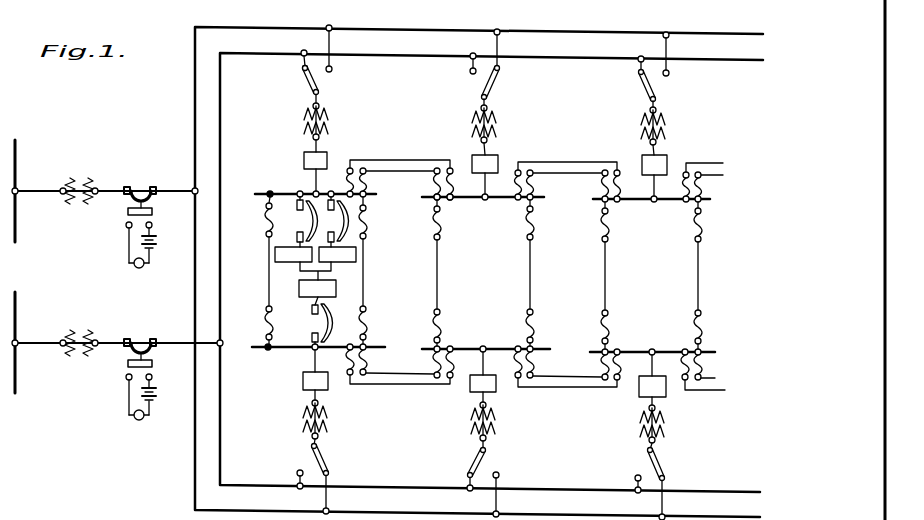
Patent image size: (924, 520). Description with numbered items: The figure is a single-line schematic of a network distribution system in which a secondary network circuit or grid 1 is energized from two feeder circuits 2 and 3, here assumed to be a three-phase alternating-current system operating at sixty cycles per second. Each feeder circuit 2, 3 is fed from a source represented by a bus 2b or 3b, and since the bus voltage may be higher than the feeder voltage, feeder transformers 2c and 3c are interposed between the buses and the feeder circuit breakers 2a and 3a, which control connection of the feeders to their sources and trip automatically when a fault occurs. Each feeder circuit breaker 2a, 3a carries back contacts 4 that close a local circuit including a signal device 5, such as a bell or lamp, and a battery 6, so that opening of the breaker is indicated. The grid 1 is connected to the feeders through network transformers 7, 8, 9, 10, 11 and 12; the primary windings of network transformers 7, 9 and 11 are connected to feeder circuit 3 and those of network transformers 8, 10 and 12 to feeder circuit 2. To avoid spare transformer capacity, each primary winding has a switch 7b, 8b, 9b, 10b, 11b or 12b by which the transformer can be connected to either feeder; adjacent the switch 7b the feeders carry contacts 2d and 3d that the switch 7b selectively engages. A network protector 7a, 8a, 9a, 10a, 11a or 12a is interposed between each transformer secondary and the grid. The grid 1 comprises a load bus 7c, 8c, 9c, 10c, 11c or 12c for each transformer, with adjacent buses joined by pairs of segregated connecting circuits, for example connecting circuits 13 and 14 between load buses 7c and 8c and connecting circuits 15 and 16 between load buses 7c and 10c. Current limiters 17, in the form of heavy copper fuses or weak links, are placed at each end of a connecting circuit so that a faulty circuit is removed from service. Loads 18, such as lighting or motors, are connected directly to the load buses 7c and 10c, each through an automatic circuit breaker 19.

The secondary network circuit or grid 1 is at (573, 281).
The feeder circuit 2 is at (177, 185).
The feeder circuit breaker 2a is at (128, 198).
The bus 2b is at (17, 150).
The feeder transformer 2c is at (85, 178).
The contact 2d is at (333, 69).
The feeder circuit 3 is at (177, 337).
The feeder circuit breaker 3a is at (127, 351).
The bus 3b is at (17, 370).
The feeder transformer 3c is at (78, 361).
The contact 3d is at (301, 69).
The back contacts 4 is at (153, 212).
The signal device 5 is at (133, 264).
The battery 6 is at (157, 238).
The network transformer 7 is at (330, 127).
The network protector 7a is at (328, 165).
The switch 7b is at (319, 86).
The load bus 7c is at (274, 187).
The network transformer 8 is at (498, 127).
The network protector 8a is at (498, 168).
The switch 8b is at (492, 92).
The load bus 8c is at (500, 200).
The network transformer 9 is at (667, 129).
The network protector 9a is at (667, 168).
The switch 9b is at (661, 92).
The load bus 9c is at (673, 202).
The network transformer 10 is at (330, 421).
The network protector 10a is at (303, 383).
The switch 10b is at (313, 461).
The load bus 10c is at (293, 342).
The network transformer 11 is at (495, 423).
The network protector 11a is at (470, 392).
The switch 11b is at (478, 463).
The load bus 11c is at (514, 342).
The network transformer 12 is at (663, 423).
The network protector 12a is at (639, 391).
The switch 12b is at (656, 466).
The load bus 12c is at (677, 345).
The connecting circuit 13 is at (424, 161).
The connecting circuit 14 is at (421, 173).
The connecting circuit 15 is at (268, 272).
The connecting circuit 16 is at (364, 272).
The current limiter 17 is at (428, 187).
The load 18 is at (330, 263).
The automatic circuit breaker 19 is at (306, 222).